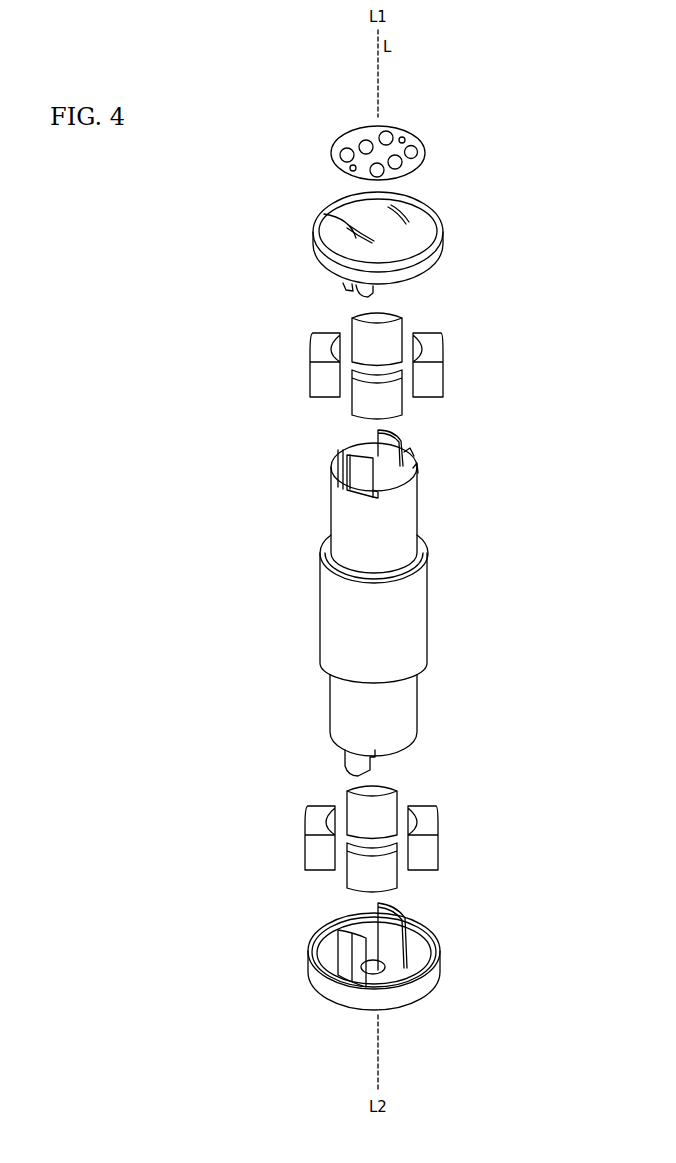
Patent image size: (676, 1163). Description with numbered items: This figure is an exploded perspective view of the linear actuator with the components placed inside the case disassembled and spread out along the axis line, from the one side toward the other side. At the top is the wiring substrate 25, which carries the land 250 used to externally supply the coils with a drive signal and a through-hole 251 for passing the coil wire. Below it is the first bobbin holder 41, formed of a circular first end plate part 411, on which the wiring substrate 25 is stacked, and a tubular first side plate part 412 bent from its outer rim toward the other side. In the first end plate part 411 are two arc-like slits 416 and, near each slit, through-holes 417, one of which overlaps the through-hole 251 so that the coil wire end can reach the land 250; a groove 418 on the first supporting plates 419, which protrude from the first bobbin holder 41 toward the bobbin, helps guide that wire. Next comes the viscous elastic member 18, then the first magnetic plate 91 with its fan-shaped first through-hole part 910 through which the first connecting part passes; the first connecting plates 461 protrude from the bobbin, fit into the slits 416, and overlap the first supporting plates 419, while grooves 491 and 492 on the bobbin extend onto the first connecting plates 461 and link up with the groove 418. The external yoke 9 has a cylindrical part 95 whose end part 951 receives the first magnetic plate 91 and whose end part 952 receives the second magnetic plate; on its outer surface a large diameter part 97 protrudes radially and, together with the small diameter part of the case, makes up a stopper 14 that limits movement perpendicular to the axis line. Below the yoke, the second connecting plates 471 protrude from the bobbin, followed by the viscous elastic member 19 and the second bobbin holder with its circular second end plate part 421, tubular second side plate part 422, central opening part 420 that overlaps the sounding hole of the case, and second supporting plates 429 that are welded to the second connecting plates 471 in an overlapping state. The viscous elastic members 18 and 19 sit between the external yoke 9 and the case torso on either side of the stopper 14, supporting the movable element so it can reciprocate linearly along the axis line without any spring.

The wiring substrate 25 is at (383, 126).
The land 250 is at (383, 131).
The through-hole 251 is at (406, 139).
The first bobbin holder 41 is at (382, 251).
The first end plate part 411 is at (428, 225).
The first side plate part 412 is at (441, 259).
The slits 416 is at (348, 228).
The through-holes 417 is at (403, 212).
The groove 418 is at (345, 288).
The first supporting plates 419 is at (415, 298).
The viscous elastic member 18 is at (375, 402).
The first magnetic plate 91 is at (350, 455).
The first through-hole part 910 is at (396, 440).
The first connecting plates 461 is at (459, 460).
The groove 491 is at (336, 472).
The groove 492 is at (355, 493).
The end part 951 is at (416, 490).
The cylindrical part 95 is at (414, 548).
The large diameter part 97 is at (414, 618).
The stopper 14 is at (426, 613).
The external yoke 9 is at (380, 599).
The end part 952 is at (410, 752).
The second connecting plates 471 is at (311, 766).
The viscous elastic member 19 is at (370, 877).
The second end plate part 421 is at (418, 962).
The second side plate part 422 is at (441, 969).
The opening part 420 is at (400, 977).
The second supporting plates 429 is at (319, 983).